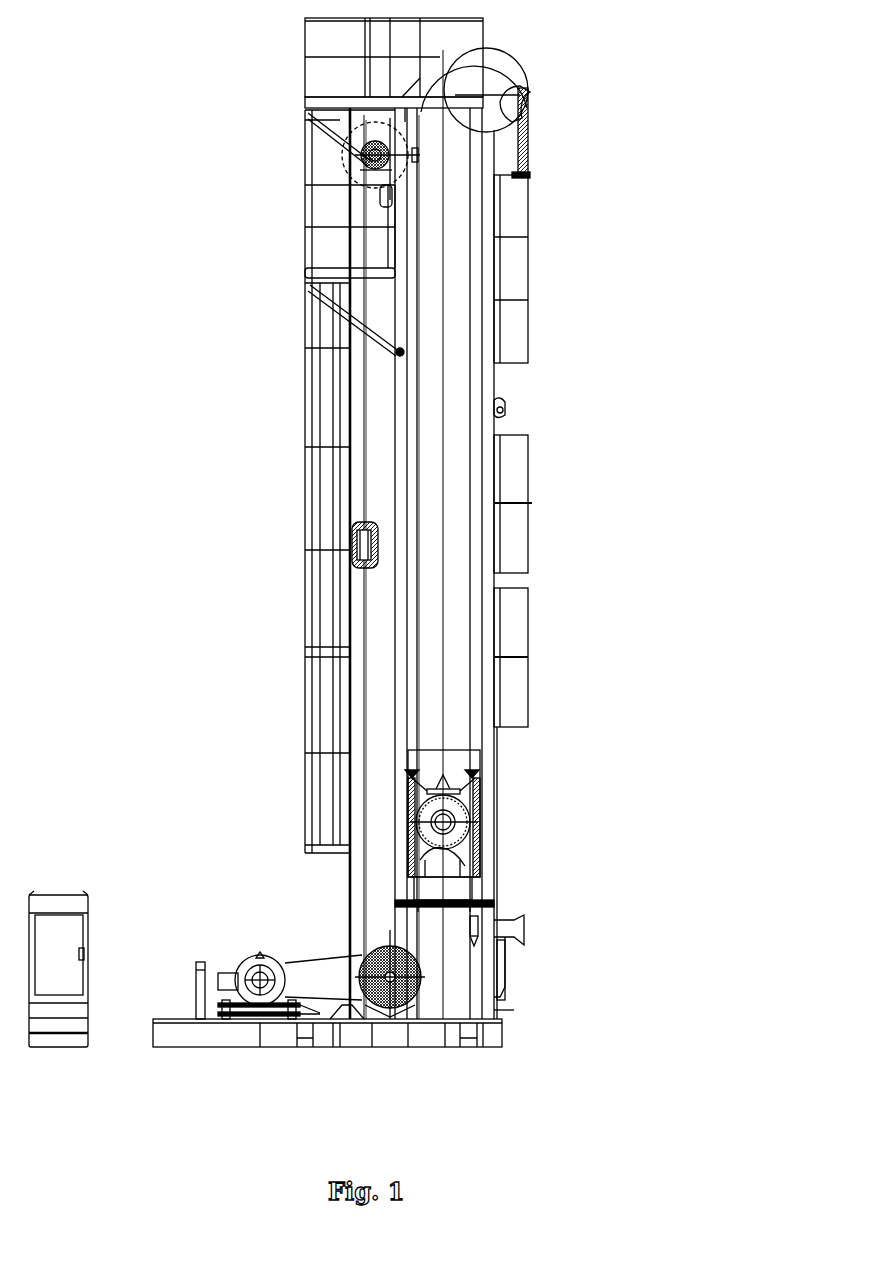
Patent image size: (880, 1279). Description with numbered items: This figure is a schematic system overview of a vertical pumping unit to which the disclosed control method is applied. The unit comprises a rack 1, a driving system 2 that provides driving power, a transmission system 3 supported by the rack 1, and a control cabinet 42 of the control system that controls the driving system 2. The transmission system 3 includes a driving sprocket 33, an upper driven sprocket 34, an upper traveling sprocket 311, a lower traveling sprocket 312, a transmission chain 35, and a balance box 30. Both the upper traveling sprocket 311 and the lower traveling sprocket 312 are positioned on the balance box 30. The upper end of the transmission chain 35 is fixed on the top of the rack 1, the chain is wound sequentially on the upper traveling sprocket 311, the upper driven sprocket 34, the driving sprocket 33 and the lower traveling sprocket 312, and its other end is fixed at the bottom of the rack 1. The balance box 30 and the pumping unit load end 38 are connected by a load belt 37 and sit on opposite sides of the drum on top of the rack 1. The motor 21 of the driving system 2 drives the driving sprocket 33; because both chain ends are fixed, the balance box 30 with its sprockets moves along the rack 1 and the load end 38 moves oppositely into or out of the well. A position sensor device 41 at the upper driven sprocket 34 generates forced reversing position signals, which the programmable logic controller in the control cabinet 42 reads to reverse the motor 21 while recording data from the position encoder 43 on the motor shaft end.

The rack 1 is at (350, 878).
The driving system 2 is at (262, 1003).
The transmission system 3 is at (473, 795).
The motor 21 is at (240, 962).
The balance box 30 is at (463, 847).
The driving sprocket 33 is at (365, 957).
The upper driven sprocket 34 is at (383, 162).
The transmission chain 35 is at (488, 405).
The load belt 37 is at (522, 135).
The pumping unit load end 38 is at (527, 178).
The position sensor device 41 is at (372, 153).
The control cabinet 42 is at (47, 895).
The position encoder 43 is at (257, 980).
The upper traveling sprocket 311 is at (468, 817).
The lower traveling sprocket 312 is at (460, 895).